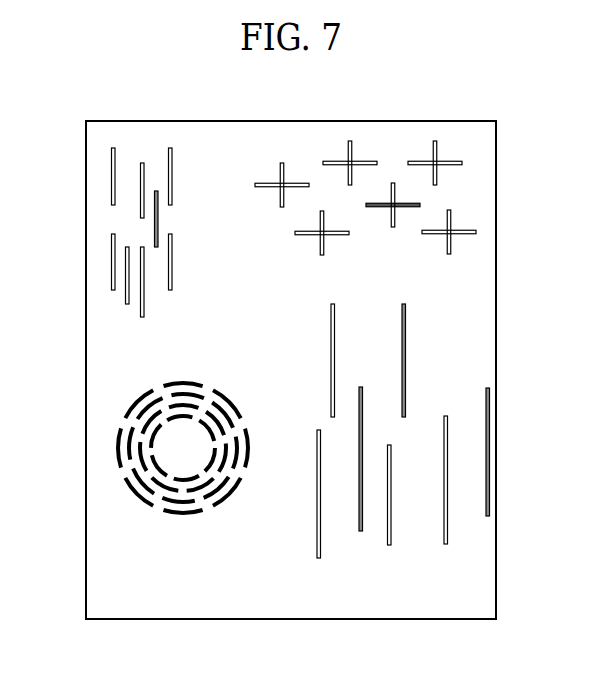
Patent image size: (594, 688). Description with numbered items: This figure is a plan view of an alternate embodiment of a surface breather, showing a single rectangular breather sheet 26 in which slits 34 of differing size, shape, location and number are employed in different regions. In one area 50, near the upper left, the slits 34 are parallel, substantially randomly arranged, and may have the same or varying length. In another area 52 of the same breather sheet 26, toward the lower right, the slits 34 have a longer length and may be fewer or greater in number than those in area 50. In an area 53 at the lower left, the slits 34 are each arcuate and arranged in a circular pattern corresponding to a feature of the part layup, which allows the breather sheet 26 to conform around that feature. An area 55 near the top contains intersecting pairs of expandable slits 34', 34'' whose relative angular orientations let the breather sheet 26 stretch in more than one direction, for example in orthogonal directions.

The breather sheet 26 is at (490, 293).
The slits 34 is at (288, 340).
The expandable slit 34' is at (473, 134).
The expandable slit 34'' is at (491, 171).
The area 50 is at (183, 170).
The area 52 is at (468, 349).
The area 53 is at (155, 522).
The area 55 is at (404, 152).